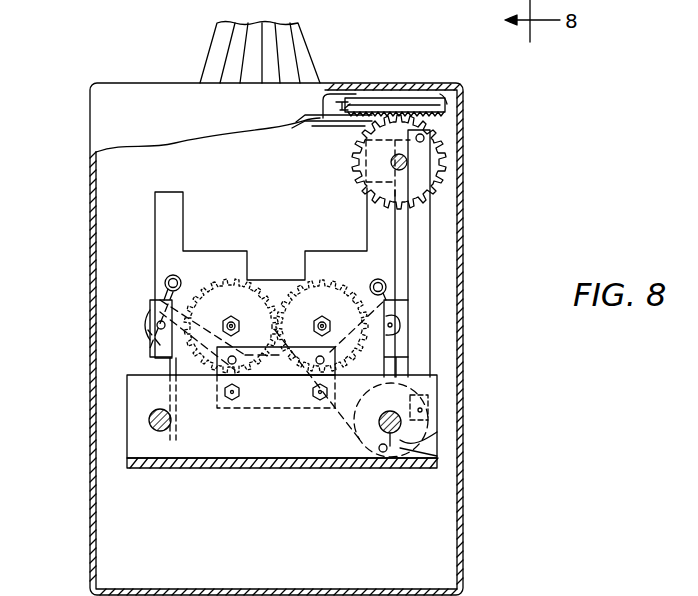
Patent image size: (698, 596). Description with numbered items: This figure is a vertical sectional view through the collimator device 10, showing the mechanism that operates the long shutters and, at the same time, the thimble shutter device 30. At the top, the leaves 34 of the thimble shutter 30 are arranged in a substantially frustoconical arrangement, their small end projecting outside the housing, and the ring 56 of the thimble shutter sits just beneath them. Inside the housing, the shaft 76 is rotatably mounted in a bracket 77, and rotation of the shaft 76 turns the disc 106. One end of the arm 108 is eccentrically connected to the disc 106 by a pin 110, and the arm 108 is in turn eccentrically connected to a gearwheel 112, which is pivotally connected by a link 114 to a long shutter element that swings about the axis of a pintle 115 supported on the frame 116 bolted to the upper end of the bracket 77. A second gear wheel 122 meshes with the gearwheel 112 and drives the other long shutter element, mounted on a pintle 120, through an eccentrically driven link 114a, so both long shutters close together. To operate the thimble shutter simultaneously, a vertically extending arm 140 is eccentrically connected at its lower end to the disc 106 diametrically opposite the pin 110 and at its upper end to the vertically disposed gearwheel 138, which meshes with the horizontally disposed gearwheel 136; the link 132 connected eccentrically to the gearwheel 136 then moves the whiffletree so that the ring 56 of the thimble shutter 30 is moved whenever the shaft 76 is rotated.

The device 10 is at (470, 158).
The shutter device 30 is at (320, 64).
The leaves 34 is at (290, 48).
The ring 56 is at (327, 100).
The shaft 76 is at (404, 440).
The bracket 77 is at (180, 452).
The disc 106 is at (437, 456).
The arm 108 is at (322, 428).
The pin 110 is at (388, 455).
The gearwheel 112 is at (314, 270).
The link 114 is at (410, 340).
The link 114a is at (150, 348).
The pintle 115 is at (374, 280).
The frame 116 is at (368, 234).
The pintle 120 is at (166, 280).
The second gear wheel 122 is at (227, 272).
The link 132 is at (362, 106).
The gearwheel 136 is at (442, 96).
The gearwheel 138 is at (362, 160).
The arm 140 is at (430, 252).